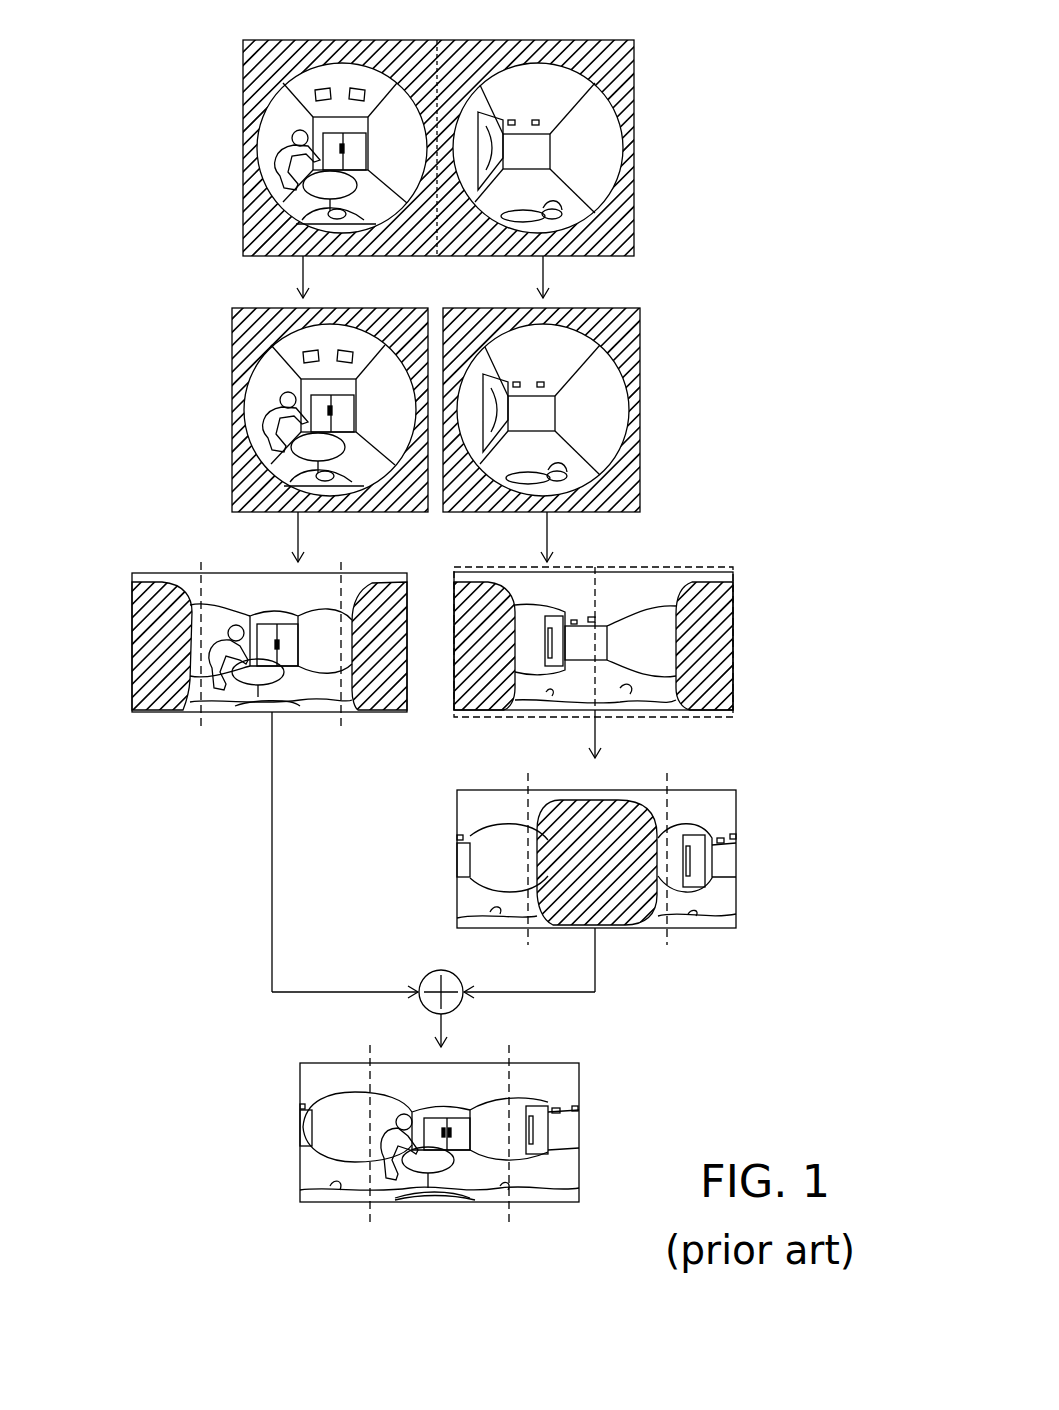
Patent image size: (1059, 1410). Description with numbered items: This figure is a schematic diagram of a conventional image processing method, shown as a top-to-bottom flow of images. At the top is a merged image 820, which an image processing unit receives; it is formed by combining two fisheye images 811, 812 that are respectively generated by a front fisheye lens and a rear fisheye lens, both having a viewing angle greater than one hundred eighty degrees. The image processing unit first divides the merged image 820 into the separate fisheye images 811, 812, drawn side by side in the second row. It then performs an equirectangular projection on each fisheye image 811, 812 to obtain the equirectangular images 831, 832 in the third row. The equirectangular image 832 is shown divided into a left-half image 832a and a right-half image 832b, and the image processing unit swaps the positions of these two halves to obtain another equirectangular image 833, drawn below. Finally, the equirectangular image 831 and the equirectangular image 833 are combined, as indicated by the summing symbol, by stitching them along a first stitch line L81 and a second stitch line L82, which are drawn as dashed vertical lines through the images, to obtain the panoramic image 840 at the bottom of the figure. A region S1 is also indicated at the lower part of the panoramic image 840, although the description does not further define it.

The merged image 820 is at (711, 0).
The fisheye image 811 is at (407, 40).
The fisheye image 812 is at (612, 40).
The equirectangular image 831 is at (132, 640).
The equirectangular image 832 is at (733, 640).
The left-half image 832a is at (575, 567).
The right-half image 832b is at (652, 567).
The equirectangular image 833 is at (736, 857).
The panoramic image 840 is at (579, 1130).
The stitching seam region S1 is at (432, 1207).
The first stitch line L81 is at (363, 878).
The second stitch line L82 is at (503, 878).